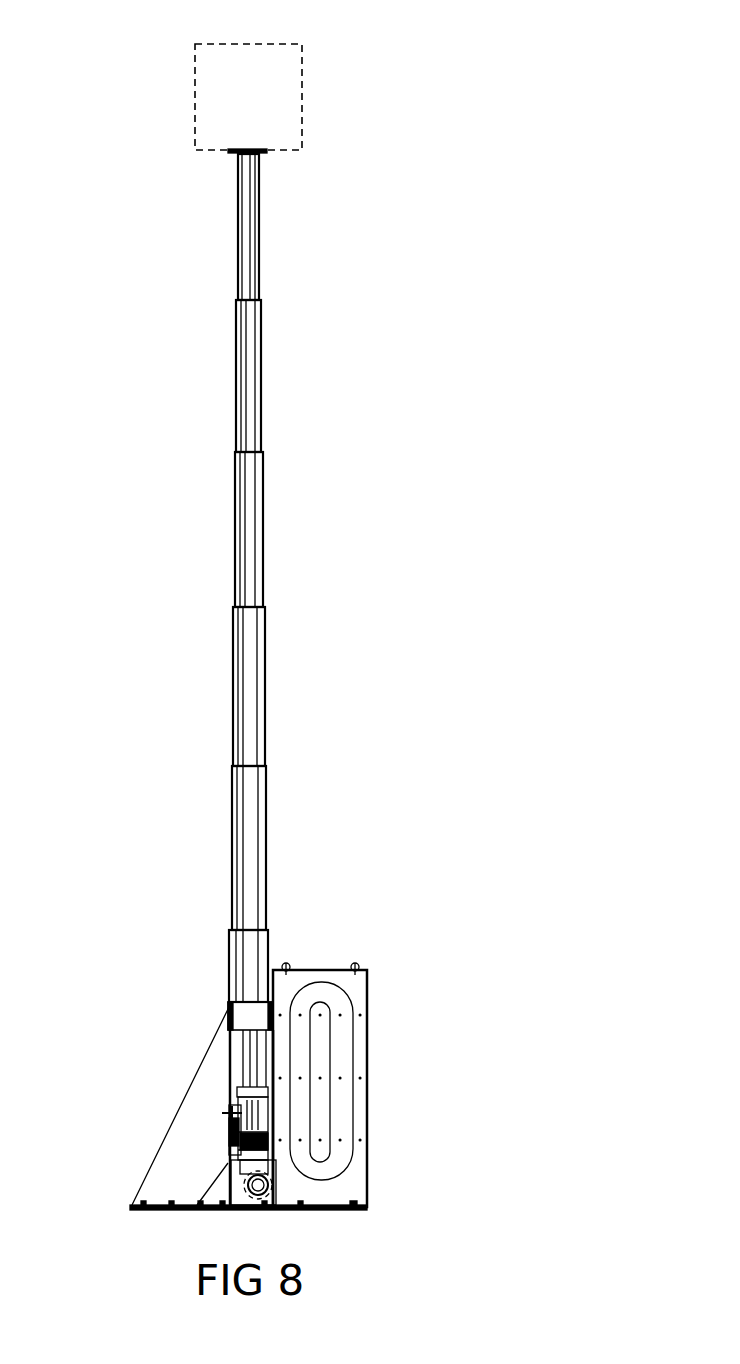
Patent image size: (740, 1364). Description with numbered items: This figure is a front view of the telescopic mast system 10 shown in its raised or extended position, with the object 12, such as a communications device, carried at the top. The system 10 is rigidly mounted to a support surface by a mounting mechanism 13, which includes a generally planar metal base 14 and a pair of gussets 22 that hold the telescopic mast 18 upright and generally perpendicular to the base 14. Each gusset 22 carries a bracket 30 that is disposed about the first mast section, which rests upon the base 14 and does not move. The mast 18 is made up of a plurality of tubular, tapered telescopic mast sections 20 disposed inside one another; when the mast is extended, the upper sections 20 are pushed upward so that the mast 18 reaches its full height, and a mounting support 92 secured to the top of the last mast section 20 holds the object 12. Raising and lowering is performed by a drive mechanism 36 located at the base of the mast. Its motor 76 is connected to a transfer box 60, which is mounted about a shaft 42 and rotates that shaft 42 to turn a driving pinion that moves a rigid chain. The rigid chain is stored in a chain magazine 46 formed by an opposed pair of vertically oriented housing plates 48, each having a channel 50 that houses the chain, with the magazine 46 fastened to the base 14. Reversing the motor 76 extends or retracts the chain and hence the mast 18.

The telescopic mast system 10 is at (468, 458).
The object 12 is at (312, 75).
The mounting mechanism 13 is at (158, 1222).
The base 14 is at (157, 1204).
The telescopic mast 18 is at (278, 495).
The telescopic mast sections 20 is at (253, 320).
The gussets 22 is at (195, 1078).
The bracket 30 is at (245, 1023).
The drive mechanism 36 is at (214, 1113).
The shaft 42 is at (253, 1207).
The chain magazine 46 is at (384, 1005).
The housing plates 48 is at (345, 1058).
The channel 50 is at (352, 1110).
The transfer box 60 is at (275, 1180).
The motor 76 is at (226, 1127).
The mounting support 92 is at (258, 150).